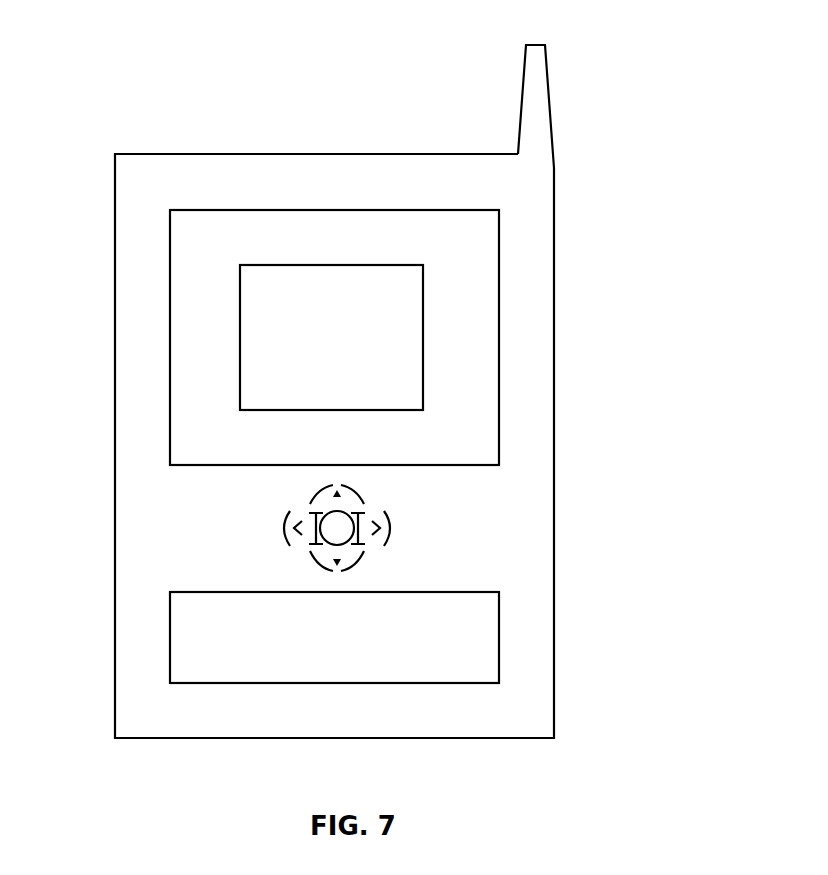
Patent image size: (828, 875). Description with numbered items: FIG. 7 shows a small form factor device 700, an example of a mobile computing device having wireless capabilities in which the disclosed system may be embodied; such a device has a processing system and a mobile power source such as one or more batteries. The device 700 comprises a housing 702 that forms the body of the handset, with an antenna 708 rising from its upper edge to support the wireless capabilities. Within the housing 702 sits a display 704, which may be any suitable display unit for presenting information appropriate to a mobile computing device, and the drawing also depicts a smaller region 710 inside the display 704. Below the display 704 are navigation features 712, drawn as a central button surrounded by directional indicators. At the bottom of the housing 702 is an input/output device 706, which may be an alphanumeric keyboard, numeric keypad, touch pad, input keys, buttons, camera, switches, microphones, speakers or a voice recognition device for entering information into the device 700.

The small form factor device 700 is at (124, 52).
The housing 702 is at (554, 446).
The display 704 is at (499, 227).
The input/output (I/O) device 706 is at (499, 628).
The antenna 708 is at (522, 95).
The display window 710 is at (423, 360).
The navigation features 712 is at (420, 518).